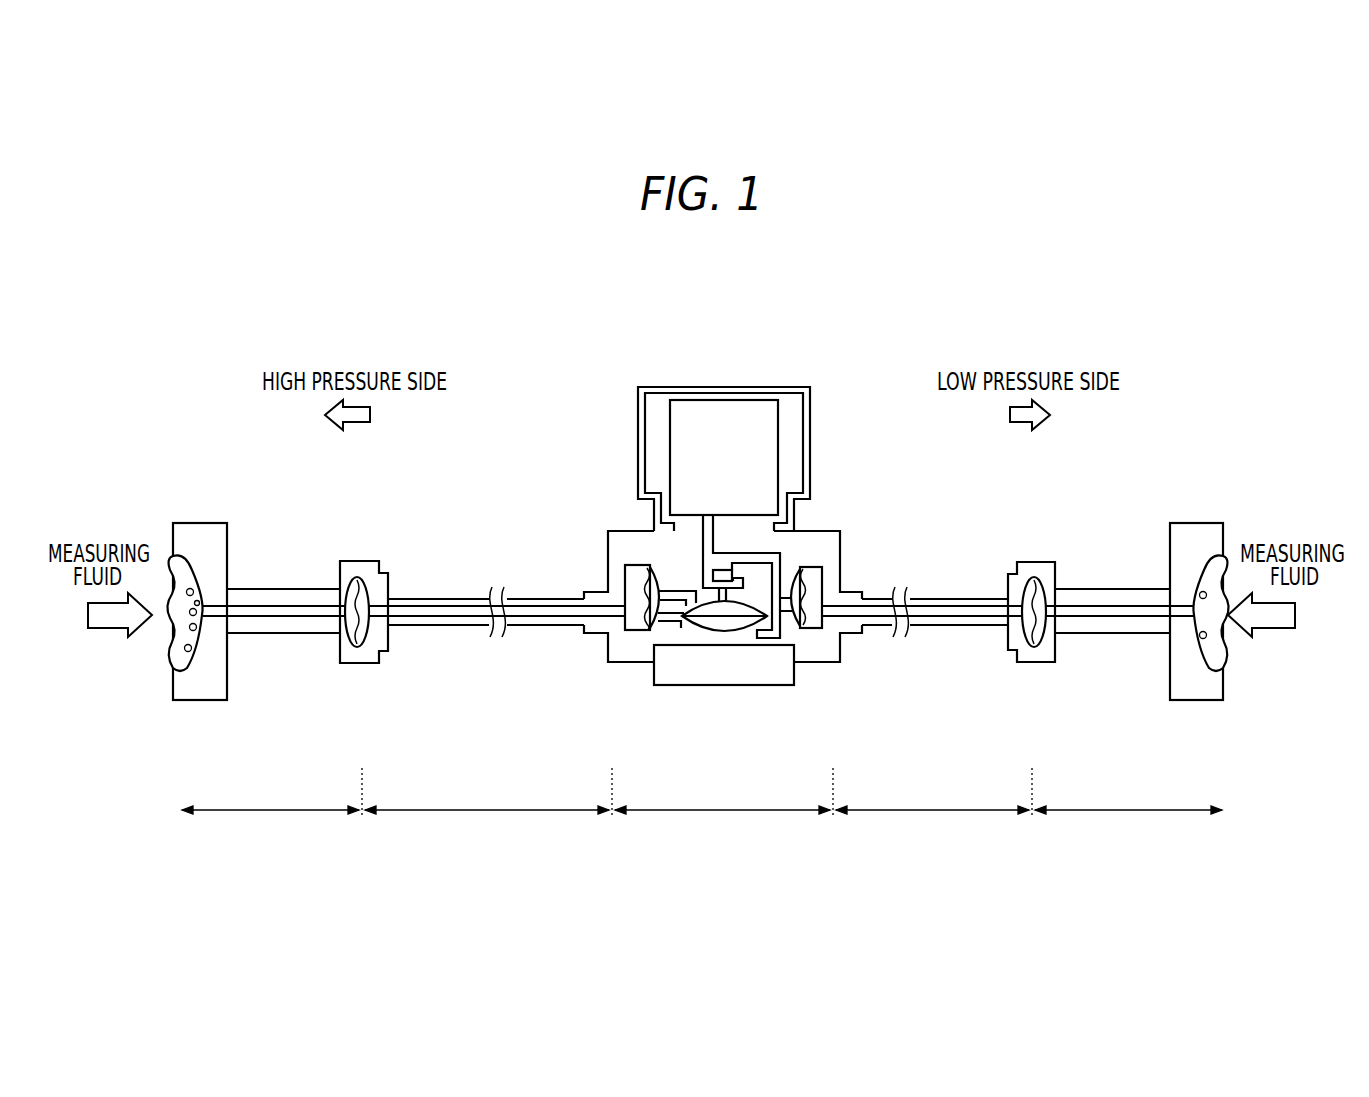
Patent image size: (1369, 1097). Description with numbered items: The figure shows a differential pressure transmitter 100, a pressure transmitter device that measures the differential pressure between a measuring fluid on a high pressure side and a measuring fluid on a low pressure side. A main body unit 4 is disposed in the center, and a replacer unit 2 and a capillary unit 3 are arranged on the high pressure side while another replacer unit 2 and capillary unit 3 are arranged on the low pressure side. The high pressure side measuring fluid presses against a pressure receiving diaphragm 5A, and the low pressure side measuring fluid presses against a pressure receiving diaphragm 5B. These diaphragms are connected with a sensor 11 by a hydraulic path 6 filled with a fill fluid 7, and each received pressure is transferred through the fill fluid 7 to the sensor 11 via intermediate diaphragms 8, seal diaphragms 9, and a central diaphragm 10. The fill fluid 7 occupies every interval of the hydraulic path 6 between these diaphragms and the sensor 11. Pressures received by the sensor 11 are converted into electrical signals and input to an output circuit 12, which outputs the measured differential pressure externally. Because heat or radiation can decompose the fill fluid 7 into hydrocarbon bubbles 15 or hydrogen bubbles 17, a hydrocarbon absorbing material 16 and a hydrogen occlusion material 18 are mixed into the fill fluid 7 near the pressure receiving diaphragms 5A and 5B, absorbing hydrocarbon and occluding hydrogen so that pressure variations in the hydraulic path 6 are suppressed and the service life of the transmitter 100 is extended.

The differential pressure transmitter 100 is at (890, 320).
The replacer unit 2 is at (702, 812).
The capillary unit 3 is at (697, 812).
The main body unit 4 is at (723, 689).
The pressure receiving diaphragm 5A is at (183, 575).
The pressure receiving diaphragm 5B is at (1208, 565).
The hydraulic path 6 is at (241, 604).
The fill fluid 7 is at (413, 606).
The intermediate diaphragm 8 is at (358, 590).
The seal diaphragm 9 is at (652, 587).
The central diaphragm 10 is at (745, 617).
The sensor 11 is at (721, 577).
The output circuit 12 is at (722, 443).
The hydrocarbon bubbles 15 is at (200, 612).
The hydrocarbon absorbing material 16 is at (193, 628).
The hydrogen bubbles 17 is at (198, 606).
The hydrogen occlusion material 18 is at (188, 652).